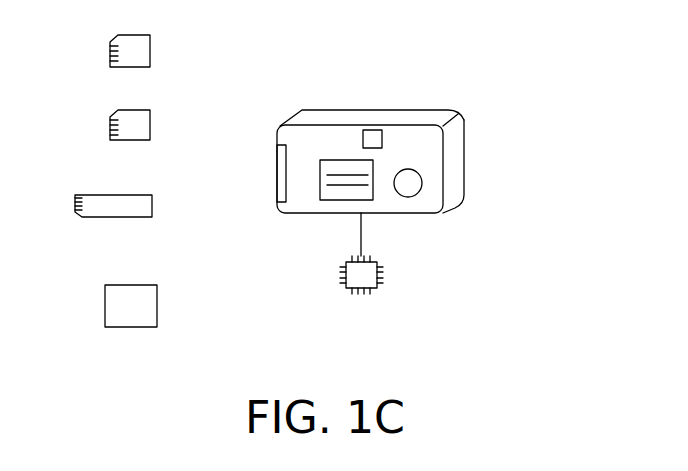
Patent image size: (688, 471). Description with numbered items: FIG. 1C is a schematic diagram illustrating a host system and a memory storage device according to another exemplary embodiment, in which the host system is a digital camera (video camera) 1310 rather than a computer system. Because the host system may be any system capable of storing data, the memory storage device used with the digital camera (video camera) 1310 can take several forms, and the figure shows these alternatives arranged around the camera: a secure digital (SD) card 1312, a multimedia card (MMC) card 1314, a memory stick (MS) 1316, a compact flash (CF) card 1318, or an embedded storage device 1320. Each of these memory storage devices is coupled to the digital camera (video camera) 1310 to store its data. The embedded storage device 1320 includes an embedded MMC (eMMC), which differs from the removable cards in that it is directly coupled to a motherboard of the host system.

The digital camera (video camera) 1310 is at (464, 148).
The secure digital (SD) card 1312 is at (150, 42).
The multimedia card (MMC) card 1314 is at (150, 117).
The memory stick (MS) 1316 is at (152, 206).
The compact flash (CF) card 1318 is at (157, 298).
The embedded storage device 1320 is at (383, 273).